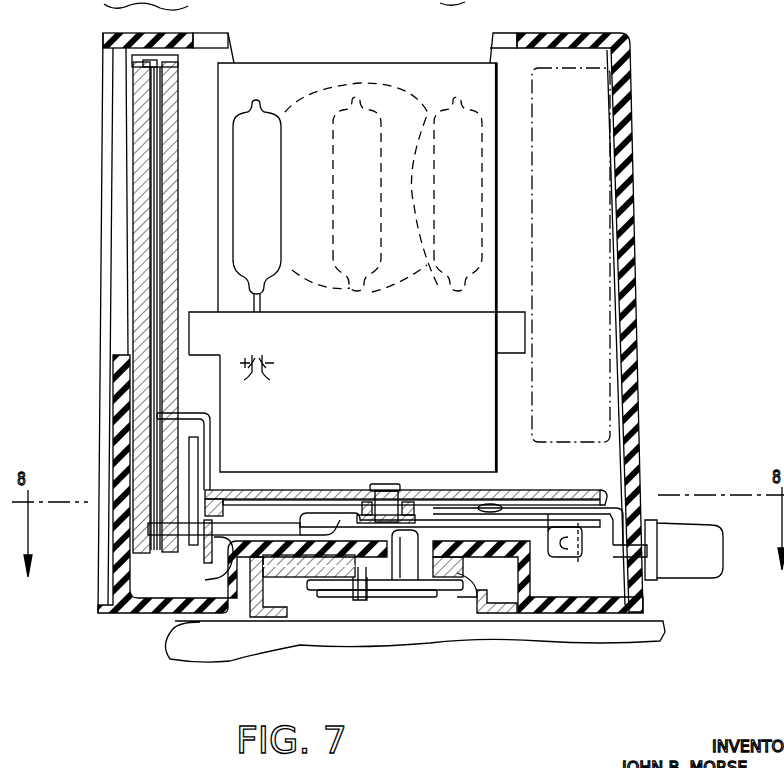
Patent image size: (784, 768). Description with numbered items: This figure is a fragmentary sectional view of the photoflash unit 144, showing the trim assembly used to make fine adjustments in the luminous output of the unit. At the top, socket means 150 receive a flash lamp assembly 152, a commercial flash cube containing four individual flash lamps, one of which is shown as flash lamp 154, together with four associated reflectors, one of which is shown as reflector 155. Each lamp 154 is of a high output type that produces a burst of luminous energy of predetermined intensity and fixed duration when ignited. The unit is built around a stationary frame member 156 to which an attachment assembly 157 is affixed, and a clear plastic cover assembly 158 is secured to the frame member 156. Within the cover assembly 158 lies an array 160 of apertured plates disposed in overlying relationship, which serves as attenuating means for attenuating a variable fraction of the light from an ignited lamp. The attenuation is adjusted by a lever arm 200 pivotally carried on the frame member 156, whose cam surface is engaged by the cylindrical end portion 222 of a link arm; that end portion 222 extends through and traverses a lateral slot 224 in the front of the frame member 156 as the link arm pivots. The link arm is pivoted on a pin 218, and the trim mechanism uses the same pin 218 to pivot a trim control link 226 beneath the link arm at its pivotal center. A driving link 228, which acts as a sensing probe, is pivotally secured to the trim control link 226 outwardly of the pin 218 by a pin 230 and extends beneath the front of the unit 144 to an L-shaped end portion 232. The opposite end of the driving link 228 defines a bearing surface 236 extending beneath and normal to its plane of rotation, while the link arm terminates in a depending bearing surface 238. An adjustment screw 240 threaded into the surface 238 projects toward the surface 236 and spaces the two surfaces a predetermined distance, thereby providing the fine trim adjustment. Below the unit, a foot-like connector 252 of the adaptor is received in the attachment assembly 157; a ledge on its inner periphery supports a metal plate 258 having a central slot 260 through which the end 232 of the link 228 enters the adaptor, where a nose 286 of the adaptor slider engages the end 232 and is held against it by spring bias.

The photoflash unit 144 is at (683, 84).
The socket means 150 is at (527, 332).
The flash lamp assembly 152 is at (450, 62).
The flash lamp 154 is at (275, 293).
The reflector 155 is at (296, 127).
The stationary frame member 156 is at (197, 405).
The attachment assembly 157 is at (485, 625).
The clear plastic cover assembly 158 is at (168, 63).
The array of apertured plates 160 is at (148, 265).
The lever arm 200 is at (197, 452).
The pin 218 is at (390, 485).
The cylindrical end portion 222 is at (172, 535).
The slot 224 is at (222, 578).
The trim control link 226 is at (710, 565).
The driving link 228 is at (435, 597).
The pin 230 is at (495, 504).
The end portion 232 is at (385, 612).
The bearing surface 236 is at (583, 547).
The bearing surface 238 is at (540, 605).
The adjustment screw 240 is at (573, 560).
The foot-like connector 252 is at (330, 612).
The metal plate 258 is at (315, 590).
The slot 260 is at (362, 605).
The nose 286 is at (358, 602).